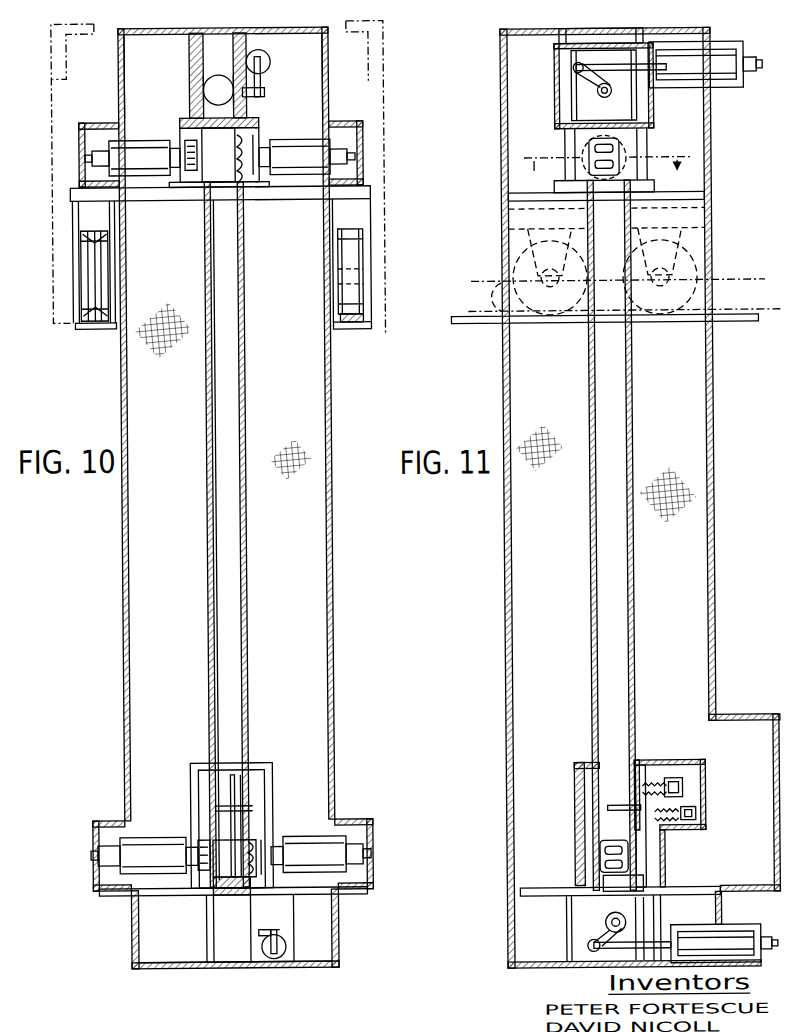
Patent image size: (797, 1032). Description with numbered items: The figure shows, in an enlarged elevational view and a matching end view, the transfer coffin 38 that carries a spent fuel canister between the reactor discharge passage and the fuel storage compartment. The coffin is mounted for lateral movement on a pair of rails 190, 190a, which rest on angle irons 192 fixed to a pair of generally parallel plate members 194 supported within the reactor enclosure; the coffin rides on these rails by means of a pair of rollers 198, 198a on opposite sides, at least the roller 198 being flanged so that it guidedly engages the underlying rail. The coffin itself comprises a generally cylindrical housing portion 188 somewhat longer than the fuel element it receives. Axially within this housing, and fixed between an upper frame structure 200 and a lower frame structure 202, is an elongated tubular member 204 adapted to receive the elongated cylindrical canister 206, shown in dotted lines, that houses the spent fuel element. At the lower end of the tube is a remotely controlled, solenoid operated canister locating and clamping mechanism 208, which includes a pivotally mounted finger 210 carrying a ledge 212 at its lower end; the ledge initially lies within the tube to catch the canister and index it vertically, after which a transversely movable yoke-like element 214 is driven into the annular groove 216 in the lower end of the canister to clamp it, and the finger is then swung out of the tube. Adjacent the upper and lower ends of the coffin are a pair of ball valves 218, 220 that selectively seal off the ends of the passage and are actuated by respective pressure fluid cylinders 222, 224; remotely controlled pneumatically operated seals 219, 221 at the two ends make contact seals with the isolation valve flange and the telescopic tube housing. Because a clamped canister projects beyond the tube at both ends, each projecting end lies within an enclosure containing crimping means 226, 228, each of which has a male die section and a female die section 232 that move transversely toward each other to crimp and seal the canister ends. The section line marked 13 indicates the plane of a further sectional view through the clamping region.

In FIG. 10, the transfer coffin 38 is at (295, 566).
In FIG. 11, the transfer coffin 38 is at (714, 410).
In FIG. 10, the housing portion 188 is at (333, 607).
In FIG. 11, the housing portion 188 is at (713, 540).
In FIG. 10, the rail 190 is at (94, 324).
In FIG. 10, the rail 190a is at (358, 323).
In FIG. 10, the angle iron 192 is at (358, 330).
In FIG. 10, the plate member 194 is at (395, 148).
In FIG. 10, the roller 198 is at (90, 317).
In FIG. 11, the roller 198 is at (715, 263).
In FIG. 10, the roller 198a is at (350, 307).
In FIG. 10, the frame structure 200 is at (338, 70).
In FIG. 10, the frame structure 202 is at (337, 928).
In FIG. 11, the frame structure 202 is at (528, 925).
In FIG. 10, the tubular member 204 is at (246, 400).
In FIG. 11, the tubular member 204 is at (636, 535).
In FIG. 10, the canister 206 is at (240, 648).
In FIG. 10, the canister locating and clamping mechanism 208 is at (255, 799).
In FIG. 11, the canister locating and clamping mechanism 208 is at (656, 762).
In FIG. 10, the finger 210 is at (222, 846).
In FIG. 11, the finger 210 is at (642, 858).
In FIG. 11, the ledge 212 is at (635, 886).
In FIG. 10, the yoke-like element 214 is at (226, 810).
In FIG. 10, the annular groove 216 is at (205, 770).
In FIG. 10, the ball valve 218 is at (207, 88).
In FIG. 10, the pneumatically operated seal 219 is at (252, 25).
In FIG. 11, the pneumatically operated seal 219 is at (690, 812).
In FIG. 10, the ball valve 220 is at (202, 944).
In FIG. 10, the pneumatically operated seal 221 is at (216, 964).
In FIG. 11, the pneumatically operated seal 221 is at (600, 968).
In FIG. 10, the pressure fluid cylinder 222 is at (268, 54).
In FIG. 11, the pressure fluid cylinder 222 is at (722, 88).
In FIG. 10, the pressure fluid cylinder 224 is at (275, 959).
In FIG. 11, the pressure fluid cylinder 224 is at (778, 930).
In FIG. 10, the crimping means 226 is at (288, 190).
In FIG. 10, the crimping means 228 is at (310, 832).
In FIG. 11, the female die section 232 is at (602, 847).
In FIG. 11, the section line 13 is at (607, 154).